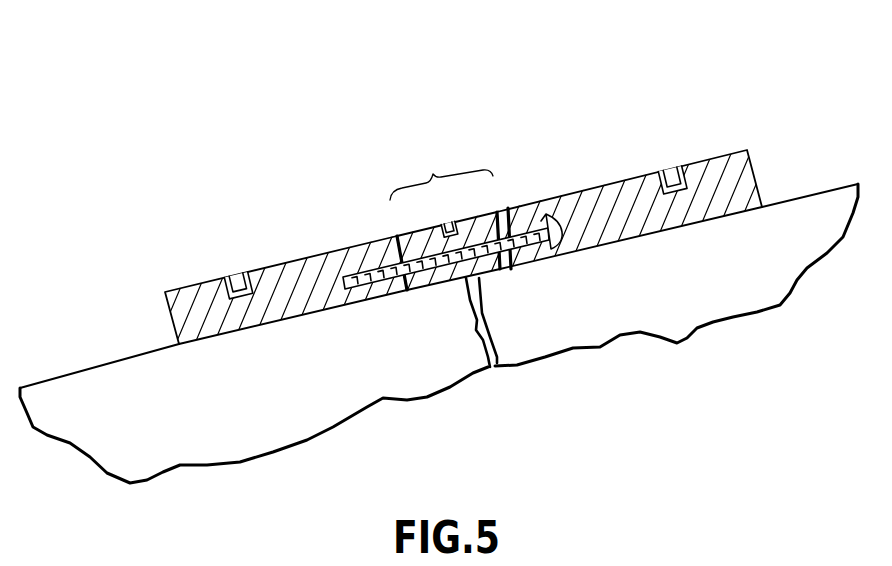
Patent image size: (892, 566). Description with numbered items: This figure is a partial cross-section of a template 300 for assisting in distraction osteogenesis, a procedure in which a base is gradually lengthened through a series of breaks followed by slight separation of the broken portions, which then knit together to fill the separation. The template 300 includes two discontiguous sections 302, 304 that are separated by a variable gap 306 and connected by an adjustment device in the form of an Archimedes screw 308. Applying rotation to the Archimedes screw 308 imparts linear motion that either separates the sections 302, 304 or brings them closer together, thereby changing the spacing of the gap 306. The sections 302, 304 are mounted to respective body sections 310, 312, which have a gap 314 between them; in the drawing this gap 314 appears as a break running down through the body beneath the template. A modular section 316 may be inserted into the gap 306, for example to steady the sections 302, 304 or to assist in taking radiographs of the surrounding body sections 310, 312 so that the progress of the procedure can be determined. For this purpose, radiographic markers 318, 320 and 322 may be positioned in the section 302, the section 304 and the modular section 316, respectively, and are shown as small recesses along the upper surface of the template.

The template 300 is at (672, 57).
The section 302 is at (330, 252).
The section 304 is at (613, 185).
The variable gap 306 is at (441, 169).
The Archimedes screw 308 is at (553, 212).
The body section 310 is at (222, 433).
The body section 312 is at (688, 290).
The gap 314 is at (494, 368).
The modular section 316 is at (413, 231).
The radiographic marker 318 is at (230, 276).
The radiographic marker 320 is at (671, 167).
The radiographic marker 322 is at (452, 221).